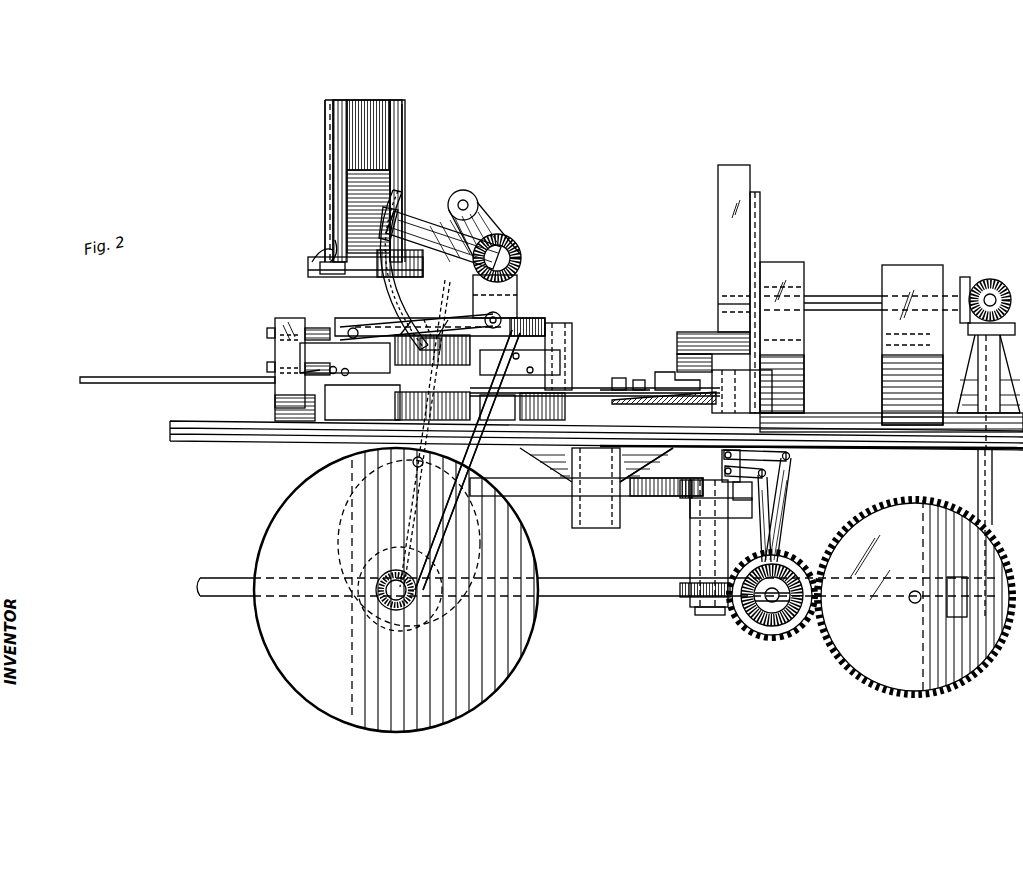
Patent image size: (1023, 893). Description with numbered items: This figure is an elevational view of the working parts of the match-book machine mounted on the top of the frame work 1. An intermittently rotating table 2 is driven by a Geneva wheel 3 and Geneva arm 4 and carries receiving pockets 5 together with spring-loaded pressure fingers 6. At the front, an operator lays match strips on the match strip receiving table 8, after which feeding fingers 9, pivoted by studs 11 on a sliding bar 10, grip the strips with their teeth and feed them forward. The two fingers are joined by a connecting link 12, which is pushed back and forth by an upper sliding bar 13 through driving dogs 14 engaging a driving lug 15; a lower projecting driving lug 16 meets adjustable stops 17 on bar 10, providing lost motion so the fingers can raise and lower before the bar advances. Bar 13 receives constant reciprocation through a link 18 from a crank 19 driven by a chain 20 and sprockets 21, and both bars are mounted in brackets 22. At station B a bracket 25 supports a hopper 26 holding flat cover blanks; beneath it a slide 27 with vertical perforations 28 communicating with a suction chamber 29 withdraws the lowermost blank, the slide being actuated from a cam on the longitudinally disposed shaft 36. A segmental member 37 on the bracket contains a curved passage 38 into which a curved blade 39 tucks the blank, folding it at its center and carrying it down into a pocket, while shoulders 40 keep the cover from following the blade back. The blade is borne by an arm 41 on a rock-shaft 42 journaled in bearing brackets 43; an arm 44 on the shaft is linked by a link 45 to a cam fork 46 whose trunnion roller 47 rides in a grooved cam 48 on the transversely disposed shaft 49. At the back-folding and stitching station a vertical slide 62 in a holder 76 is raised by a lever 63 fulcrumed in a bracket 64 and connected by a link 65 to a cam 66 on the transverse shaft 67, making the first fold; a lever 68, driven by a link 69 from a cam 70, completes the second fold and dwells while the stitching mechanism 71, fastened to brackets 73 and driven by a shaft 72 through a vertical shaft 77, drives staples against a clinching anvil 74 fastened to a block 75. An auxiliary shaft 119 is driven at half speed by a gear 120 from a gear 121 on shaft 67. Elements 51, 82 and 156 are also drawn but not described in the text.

The top of frame work 1 is at (868, 446).
The intermittently rotating table 2 is at (596, 488).
The Geneva wheel 3 is at (548, 497).
The Geneva arm 4 is at (722, 518).
The receiving pockets 5 is at (388, 170).
The pressure fingers 6 is at (665, 375).
The match strip receiving table 8 is at (176, 382).
The feeding fingers 9 is at (580, 380).
The sliding bar 10 is at (275, 392).
The studs 11 is at (280, 445).
The connecting link 12 is at (355, 395).
The sliding bar 13 is at (305, 318).
The driving dogs 14 is at (405, 335).
The driving lug 15 is at (427, 338).
The projecting driving lug 16 is at (520, 325).
The adjustable stops 17 is at (470, 395).
The link 18 is at (352, 327).
The crank 19 is at (503, 318).
The chain 20 is at (470, 455).
The sprockets 21 is at (548, 335).
The brackets 22 is at (275, 350).
The bracket 25 is at (312, 258).
The hopper 26 is at (330, 150).
The slide 27 is at (320, 268).
The vertical perforations 28 is at (333, 248).
The chamber 29 is at (312, 262).
The longitudinally disposed shaft 36 is at (610, 580).
The segmental member 37 is at (372, 283).
The curved passage 38 is at (378, 298).
The curved blade 39 is at (365, 210).
The shoulders 40 is at (522, 405).
The arm 41 is at (430, 210).
The rock-shaft 42 is at (515, 255).
The bearing brackets 43 is at (517, 290).
The arm 44 is at (485, 222).
The link 45 is at (418, 262).
The cam fork 46 is at (375, 520).
The trunnion roller 47 is at (360, 462).
The cam 48 is at (358, 605).
The transversely disposed shaft 49 is at (380, 610).
The stop 51 is at (639, 378).
The vertical slide 62 is at (722, 455).
The lever 63 is at (790, 458).
The bracket 64 is at (722, 472).
The link 65 is at (772, 515).
The cam 66 is at (795, 560).
The transverse shaft 67 is at (750, 620).
The lever 68 is at (718, 368).
The link 69 is at (789, 490).
The cam 70 is at (782, 570).
The stitching mechanism 71 is at (716, 273).
The shaft 72 is at (830, 296).
The brackets 73 is at (778, 262).
The clinching anvil 74 is at (728, 392).
The block 75 is at (690, 400).
The holder 76 is at (690, 448).
The vertical shaft 77 is at (978, 480).
The stop 82 is at (616, 378).
The auxiliary shaft 119 is at (908, 603).
The gear 120 is at (848, 660).
The gear 121 is at (780, 638).
The bevel gear 156 is at (990, 292).